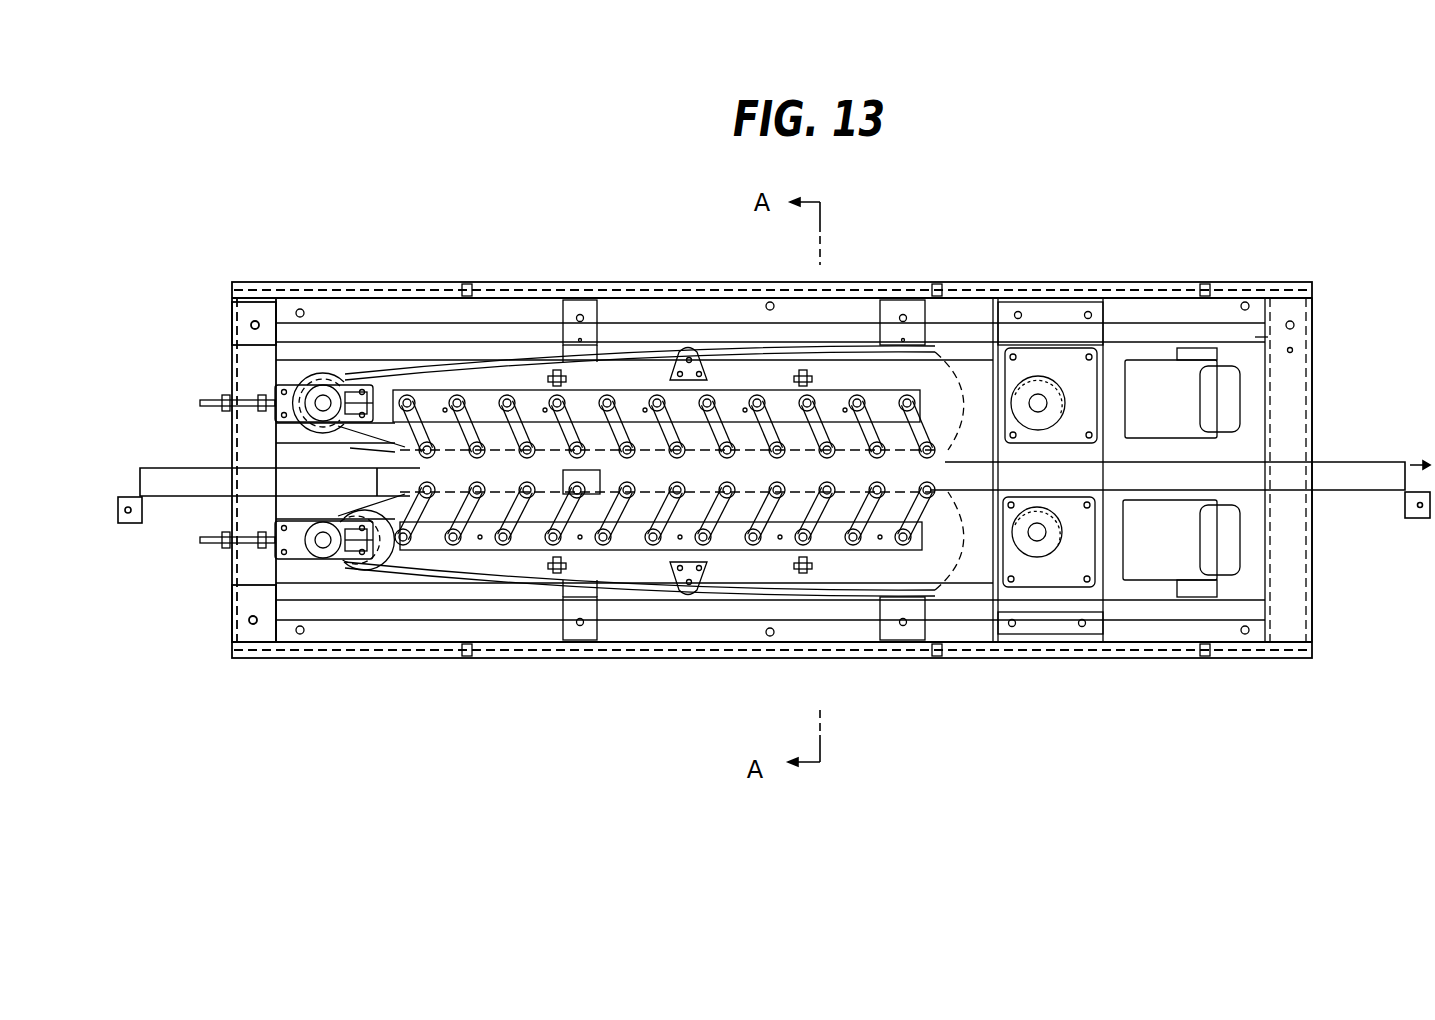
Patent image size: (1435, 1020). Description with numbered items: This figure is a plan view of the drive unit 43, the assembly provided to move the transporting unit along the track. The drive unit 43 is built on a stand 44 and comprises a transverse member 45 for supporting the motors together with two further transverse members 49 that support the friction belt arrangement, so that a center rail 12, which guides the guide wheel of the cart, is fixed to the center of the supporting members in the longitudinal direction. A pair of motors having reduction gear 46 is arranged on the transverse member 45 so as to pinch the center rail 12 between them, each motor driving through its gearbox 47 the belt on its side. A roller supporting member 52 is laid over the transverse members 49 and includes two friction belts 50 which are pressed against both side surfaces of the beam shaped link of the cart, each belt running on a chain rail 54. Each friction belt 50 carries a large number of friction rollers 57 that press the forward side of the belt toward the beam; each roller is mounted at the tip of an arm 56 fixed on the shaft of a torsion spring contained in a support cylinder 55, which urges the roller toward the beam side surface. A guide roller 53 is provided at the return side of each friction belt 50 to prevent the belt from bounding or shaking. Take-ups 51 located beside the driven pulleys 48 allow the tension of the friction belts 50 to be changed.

The center rail 12 is at (157, 480).
The drive unit 43 is at (1290, 280).
The stand 44 is at (1300, 338).
The transverse member 45 is at (1065, 332).
The motor having reduction gear 46 is at (1215, 407).
The gearbox with drive sprocket 47 is at (1030, 405).
The driven pulley 48 is at (300, 388).
The transverse member 49 is at (566, 335).
The friction belt 50 is at (950, 457).
The take-up 51 is at (225, 408).
The roller supporting member 52 is at (755, 378).
The guide roller 53 is at (686, 352).
The chain rail 54 is at (466, 390).
The support cylinder 55 is at (403, 393).
The arm 56 is at (352, 451).
The friction roller 57 is at (418, 462).